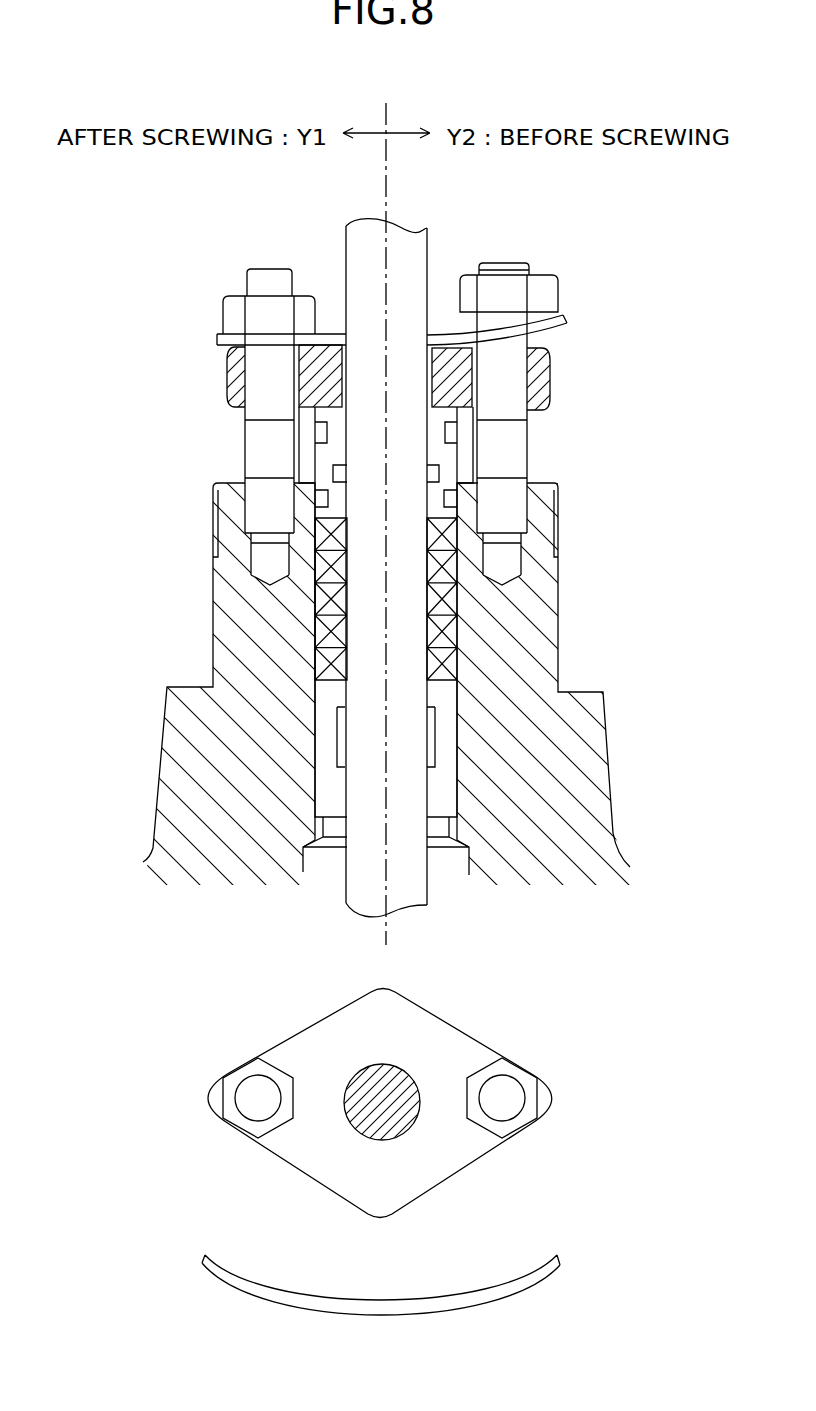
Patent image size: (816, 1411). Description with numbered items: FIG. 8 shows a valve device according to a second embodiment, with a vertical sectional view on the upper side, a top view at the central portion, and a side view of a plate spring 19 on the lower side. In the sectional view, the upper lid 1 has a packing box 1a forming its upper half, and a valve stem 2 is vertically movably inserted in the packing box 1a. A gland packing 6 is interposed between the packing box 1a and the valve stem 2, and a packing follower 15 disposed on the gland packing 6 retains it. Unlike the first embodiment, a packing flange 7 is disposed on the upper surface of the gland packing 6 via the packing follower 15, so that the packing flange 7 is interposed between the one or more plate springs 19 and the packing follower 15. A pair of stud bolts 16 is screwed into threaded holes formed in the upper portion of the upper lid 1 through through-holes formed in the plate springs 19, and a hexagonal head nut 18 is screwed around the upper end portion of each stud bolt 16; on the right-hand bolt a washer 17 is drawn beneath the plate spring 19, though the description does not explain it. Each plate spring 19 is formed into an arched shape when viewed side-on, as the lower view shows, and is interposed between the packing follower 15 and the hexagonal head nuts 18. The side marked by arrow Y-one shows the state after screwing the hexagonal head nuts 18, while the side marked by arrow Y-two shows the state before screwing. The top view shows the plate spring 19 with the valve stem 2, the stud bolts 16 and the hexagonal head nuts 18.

The upper lid 1 is at (610, 784).
The packing box 1a is at (317, 665).
The valve stem 2 is at (343, 1082).
The gland packing 6 is at (460, 617).
The packing flange 7 is at (240, 406).
The packing follower 15 is at (457, 457).
The stud bolts 16 is at (495, 262).
The spring washer 17 is at (528, 380).
The hexagonal head nut 18 is at (557, 285).
The plate springs 19 is at (216, 338).